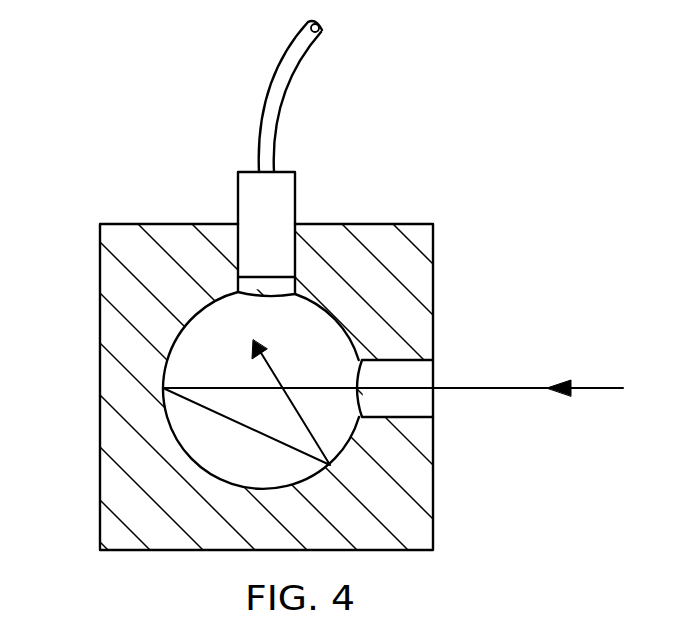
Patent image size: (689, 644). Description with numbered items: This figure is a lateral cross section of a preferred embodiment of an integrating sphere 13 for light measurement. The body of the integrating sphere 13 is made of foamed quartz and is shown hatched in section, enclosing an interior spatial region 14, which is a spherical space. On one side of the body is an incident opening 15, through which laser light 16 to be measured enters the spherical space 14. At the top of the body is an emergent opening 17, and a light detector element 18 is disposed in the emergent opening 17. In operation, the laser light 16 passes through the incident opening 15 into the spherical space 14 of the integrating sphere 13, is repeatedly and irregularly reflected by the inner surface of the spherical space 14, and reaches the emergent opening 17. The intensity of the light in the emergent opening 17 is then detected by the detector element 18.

The integrating sphere 13 is at (115, 478).
The interior spatial region 14 is at (330, 328).
The incident opening 15 is at (418, 373).
The laser light 16 is at (589, 392).
The emergent opening 17 is at (248, 285).
The light detector element 18 is at (248, 190).